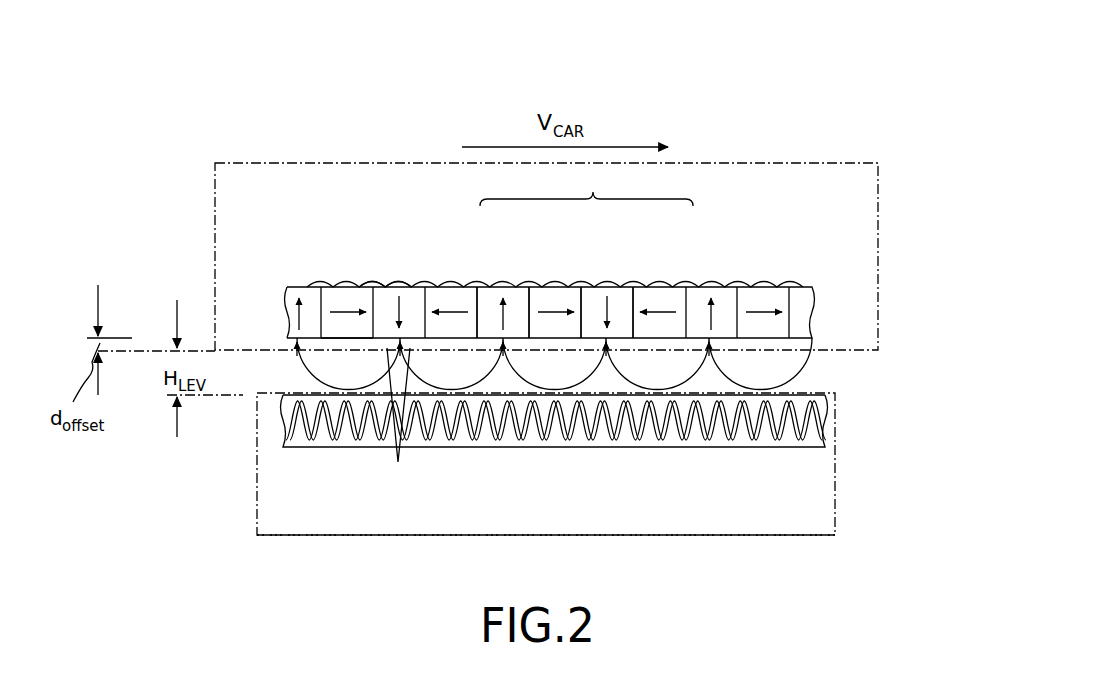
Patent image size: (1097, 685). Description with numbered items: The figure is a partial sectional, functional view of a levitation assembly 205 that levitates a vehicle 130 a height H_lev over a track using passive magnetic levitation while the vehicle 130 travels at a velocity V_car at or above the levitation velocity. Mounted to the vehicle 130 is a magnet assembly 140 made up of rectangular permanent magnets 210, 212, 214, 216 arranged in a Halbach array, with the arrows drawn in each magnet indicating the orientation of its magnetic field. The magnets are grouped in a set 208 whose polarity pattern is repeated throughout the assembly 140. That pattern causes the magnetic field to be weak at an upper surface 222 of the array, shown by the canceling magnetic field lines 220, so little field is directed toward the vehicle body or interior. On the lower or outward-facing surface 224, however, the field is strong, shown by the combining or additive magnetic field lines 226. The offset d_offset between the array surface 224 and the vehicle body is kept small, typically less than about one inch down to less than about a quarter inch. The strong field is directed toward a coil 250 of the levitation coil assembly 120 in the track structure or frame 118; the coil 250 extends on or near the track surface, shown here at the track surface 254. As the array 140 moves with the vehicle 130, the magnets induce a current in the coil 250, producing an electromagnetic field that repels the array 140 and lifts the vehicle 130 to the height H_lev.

The levitation assembly 205 is at (816, 63).
The vehicle 130 is at (232, 163).
The magnet assembly 140 is at (817, 287).
The set of magnets 208 is at (586, 185).
The permanent magnet 210 is at (503, 287).
The permanent magnet 212 is at (548, 287).
The permanent magnet 214 is at (607, 287).
The permanent magnet 216 is at (668, 287).
The canceling magnetic field lines 220 is at (365, 286).
The upper surface 222 is at (404, 286).
The lower surface 224 is at (350, 340).
The additive magnetic field lines 226 is at (398, 462).
The stator top surface 254 is at (816, 394).
The coil 250 is at (746, 437).
The levitation coil assembly 120 is at (846, 435).
The track structure 118 is at (832, 537).